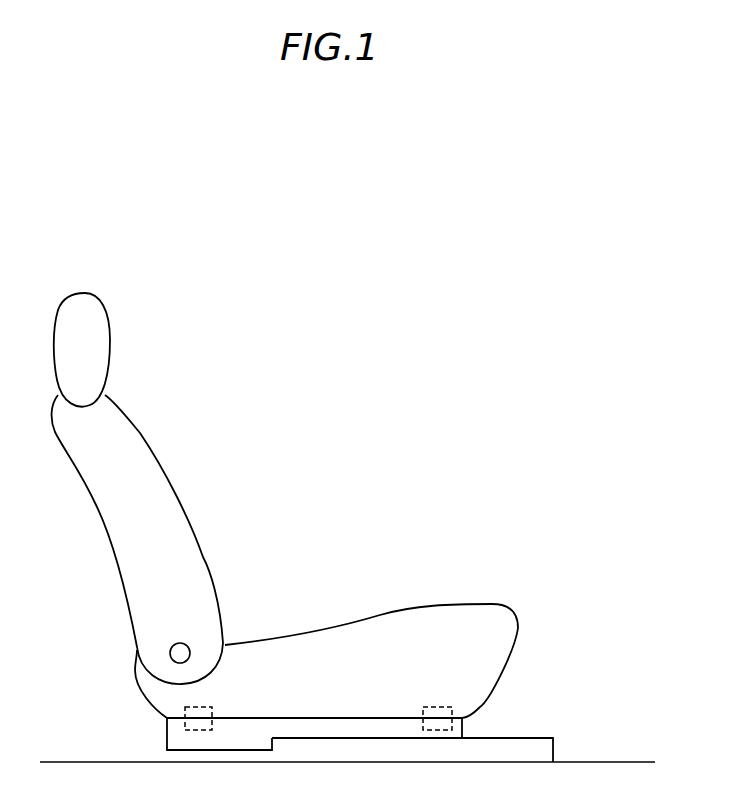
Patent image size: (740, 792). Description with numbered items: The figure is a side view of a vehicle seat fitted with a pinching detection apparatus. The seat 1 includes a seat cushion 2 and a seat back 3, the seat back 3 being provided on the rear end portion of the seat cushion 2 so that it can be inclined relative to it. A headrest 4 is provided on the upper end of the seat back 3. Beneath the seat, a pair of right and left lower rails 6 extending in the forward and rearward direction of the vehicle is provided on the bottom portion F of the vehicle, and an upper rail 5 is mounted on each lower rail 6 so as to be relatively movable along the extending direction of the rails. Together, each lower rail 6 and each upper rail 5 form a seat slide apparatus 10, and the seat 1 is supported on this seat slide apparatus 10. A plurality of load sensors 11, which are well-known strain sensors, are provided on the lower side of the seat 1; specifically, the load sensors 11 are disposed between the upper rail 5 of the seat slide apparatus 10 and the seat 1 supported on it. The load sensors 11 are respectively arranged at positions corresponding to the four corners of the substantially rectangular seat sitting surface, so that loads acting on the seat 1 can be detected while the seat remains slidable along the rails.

The seat 1 is at (513, 338).
The seat cushion 2 is at (457, 604).
The seat back 3 is at (158, 465).
The headrest 4 is at (112, 345).
The upper rail 5 is at (167, 730).
The lower rail 6 is at (535, 738).
The seat slide apparatus 10 is at (545, 677).
The load sensor 11 is at (198, 705).
The bottom portion F is at (575, 762).